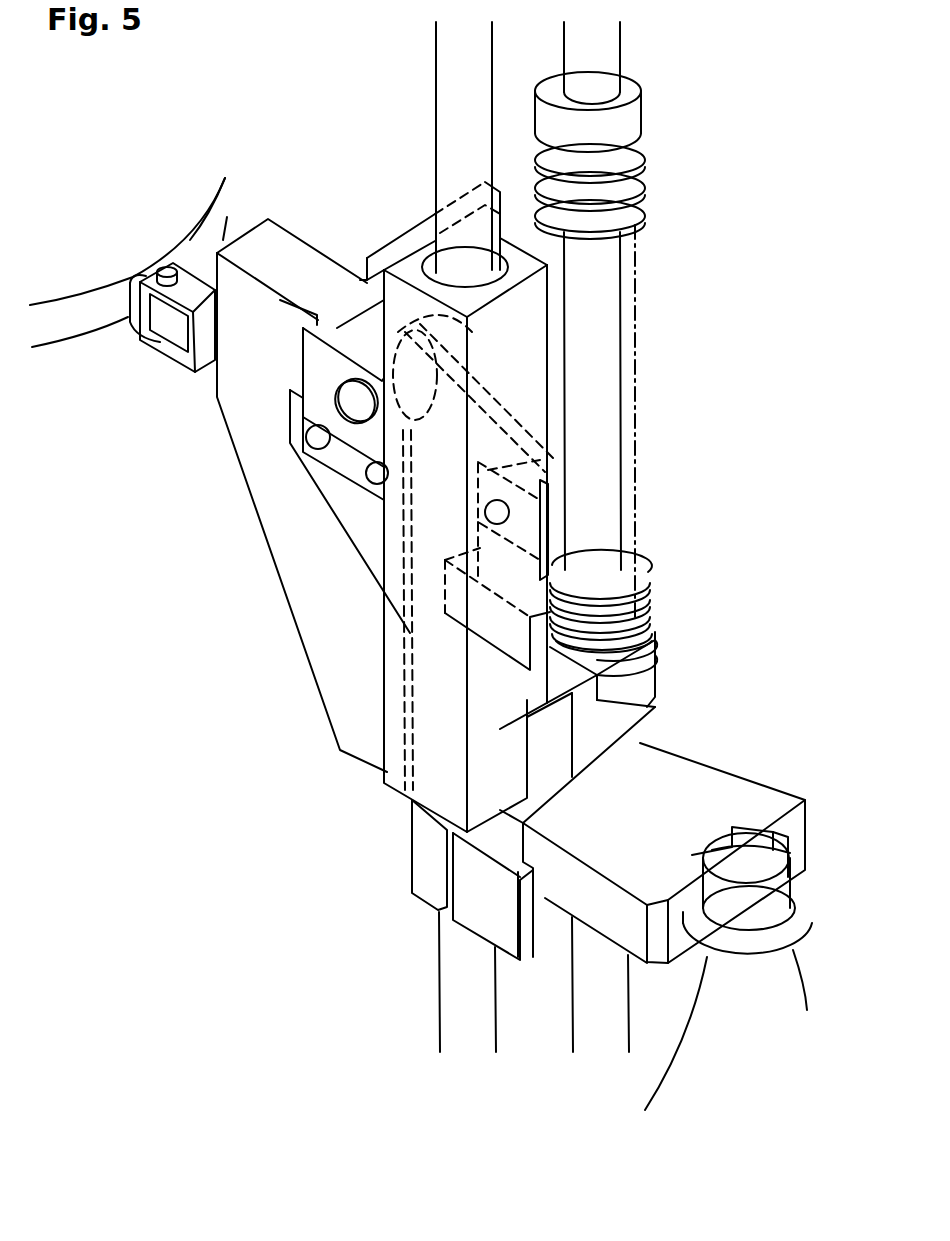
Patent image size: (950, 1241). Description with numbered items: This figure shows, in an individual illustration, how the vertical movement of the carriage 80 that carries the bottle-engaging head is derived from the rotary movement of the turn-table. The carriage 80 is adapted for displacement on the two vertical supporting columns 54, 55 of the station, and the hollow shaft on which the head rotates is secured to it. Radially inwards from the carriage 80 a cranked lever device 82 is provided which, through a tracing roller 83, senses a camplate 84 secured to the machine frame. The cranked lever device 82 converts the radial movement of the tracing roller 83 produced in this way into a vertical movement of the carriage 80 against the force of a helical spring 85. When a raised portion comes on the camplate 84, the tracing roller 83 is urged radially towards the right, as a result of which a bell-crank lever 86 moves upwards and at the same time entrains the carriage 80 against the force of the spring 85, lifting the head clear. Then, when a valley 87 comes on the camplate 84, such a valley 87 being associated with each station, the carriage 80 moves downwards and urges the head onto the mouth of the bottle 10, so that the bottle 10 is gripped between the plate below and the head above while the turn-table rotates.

The bottle 10 is at (717, 1013).
The vertical supporting column 54 is at (603, 40).
The vertical supporting column 55 is at (460, 42).
The carriage 80 is at (660, 695).
The cranked lever device 82 is at (240, 500).
The tracing roller 83 is at (150, 315).
The camplate 84 is at (57, 327).
The helical spring 85 is at (647, 580).
The bell-crank lever 86 is at (492, 432).
The valley 87 is at (110, 240).